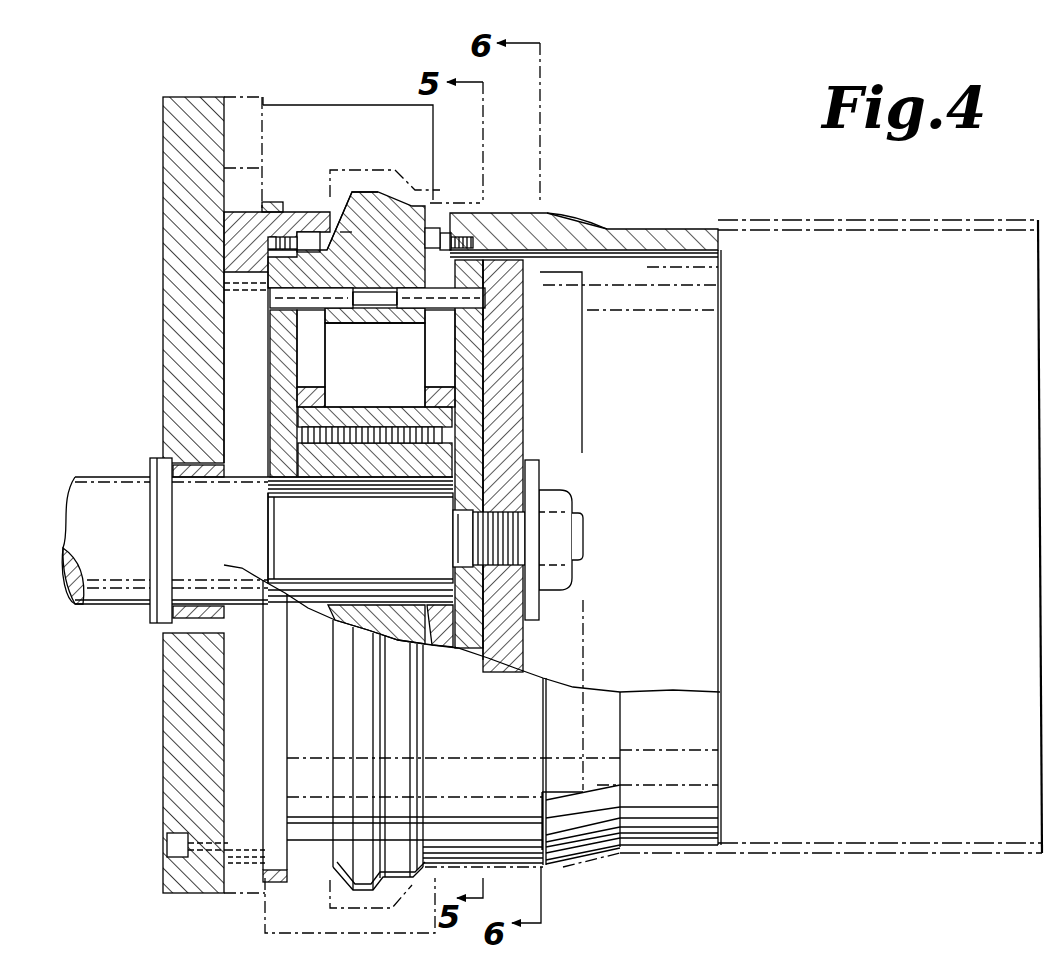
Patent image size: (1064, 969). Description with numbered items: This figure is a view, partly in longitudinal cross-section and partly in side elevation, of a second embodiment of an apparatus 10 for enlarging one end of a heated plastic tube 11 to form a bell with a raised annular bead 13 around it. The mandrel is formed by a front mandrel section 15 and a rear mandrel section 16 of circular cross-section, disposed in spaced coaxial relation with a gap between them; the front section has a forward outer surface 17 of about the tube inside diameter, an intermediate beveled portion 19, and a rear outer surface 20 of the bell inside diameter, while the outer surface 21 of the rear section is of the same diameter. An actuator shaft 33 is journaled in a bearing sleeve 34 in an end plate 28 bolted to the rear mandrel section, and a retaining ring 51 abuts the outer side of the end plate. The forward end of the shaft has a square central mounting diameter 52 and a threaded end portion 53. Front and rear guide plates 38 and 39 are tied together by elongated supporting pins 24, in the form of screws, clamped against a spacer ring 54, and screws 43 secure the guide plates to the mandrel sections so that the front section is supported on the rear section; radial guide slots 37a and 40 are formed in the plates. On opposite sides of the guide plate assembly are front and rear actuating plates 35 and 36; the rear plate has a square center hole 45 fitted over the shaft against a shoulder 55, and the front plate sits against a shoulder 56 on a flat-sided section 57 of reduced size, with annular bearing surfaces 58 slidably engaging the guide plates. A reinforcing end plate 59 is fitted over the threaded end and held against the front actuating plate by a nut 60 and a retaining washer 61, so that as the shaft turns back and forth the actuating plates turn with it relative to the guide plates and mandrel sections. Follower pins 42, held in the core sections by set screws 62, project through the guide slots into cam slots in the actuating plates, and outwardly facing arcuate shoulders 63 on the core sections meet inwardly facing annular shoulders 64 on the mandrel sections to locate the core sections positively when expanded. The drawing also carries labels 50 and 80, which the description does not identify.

The apparatus 10 is at (802, 203).
The plastic tube 11 is at (642, 212).
The raised annular bead 13 is at (400, 188).
The front mandrel section 15 is at (650, 254).
The rear mandrel section 16 is at (233, 238).
The outer surface 17 is at (683, 230).
The intermediate beveled portion 19 is at (567, 218).
The outer surface 20 is at (510, 212).
The outer surface 21 is at (233, 212).
The elongated supporting pins 24 is at (363, 427).
The end plate 28 is at (175, 297).
The actuator shaft 33 is at (118, 447).
The bearing sleeve 34 is at (193, 473).
The front actuating plate 35 is at (478, 350).
The rear actuating plate 36 is at (282, 365).
The radial guide slot 37a is at (272, 330).
The front guide plate 38 is at (440, 295).
The rear guide plate 39 is at (311, 225).
The radial guide slot 40 is at (322, 370).
The follower pins 42 is at (285, 303).
The screws 43 is at (286, 236).
The square center hole 45 is at (290, 487).
The cover 50 is at (330, 100).
The retaining ring 51 is at (160, 630).
The central mounting diameter 52 is at (375, 553).
The threaded end portion 53 is at (578, 538).
The spacer ring 54 is at (383, 470).
The shoulder 55 is at (273, 487).
The shoulder 56 is at (457, 556).
The flat-sided section 57 is at (457, 523).
The annular bearing surfaces 58 is at (478, 470).
The reinforcing end plate 59 is at (517, 373).
The nut 60 is at (560, 503).
The retaining washer 61 is at (538, 463).
The set screws 62 is at (340, 315).
The arcuate shoulders 63 is at (338, 221).
The annular shoulders 64 is at (350, 224).
The nut 80 is at (271, 237).